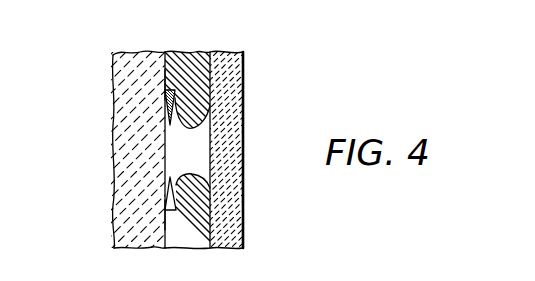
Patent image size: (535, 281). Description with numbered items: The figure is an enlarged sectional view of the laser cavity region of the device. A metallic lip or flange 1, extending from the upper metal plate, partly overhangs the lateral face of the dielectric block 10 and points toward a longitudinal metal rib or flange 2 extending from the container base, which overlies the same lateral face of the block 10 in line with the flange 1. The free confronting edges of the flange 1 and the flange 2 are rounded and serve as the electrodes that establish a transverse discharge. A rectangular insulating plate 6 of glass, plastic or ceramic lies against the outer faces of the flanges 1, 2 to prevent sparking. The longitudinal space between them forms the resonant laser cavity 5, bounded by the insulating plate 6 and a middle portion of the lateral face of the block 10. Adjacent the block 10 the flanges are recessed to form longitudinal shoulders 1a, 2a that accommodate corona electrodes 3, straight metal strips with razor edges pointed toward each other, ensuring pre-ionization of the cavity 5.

The metallic lip or flange 1 is at (198, 103).
The longitudinal shoulder 1a is at (165, 75).
The longitudinal metal rib or flange 2 is at (198, 180).
The longitudinal shoulder 2a is at (165, 210).
The corona electrodes 3 is at (168, 123).
The resonant laser cavity 5 is at (197, 148).
The insulating plate 6 is at (213, 63).
The dielectric block 10 is at (165, 120).